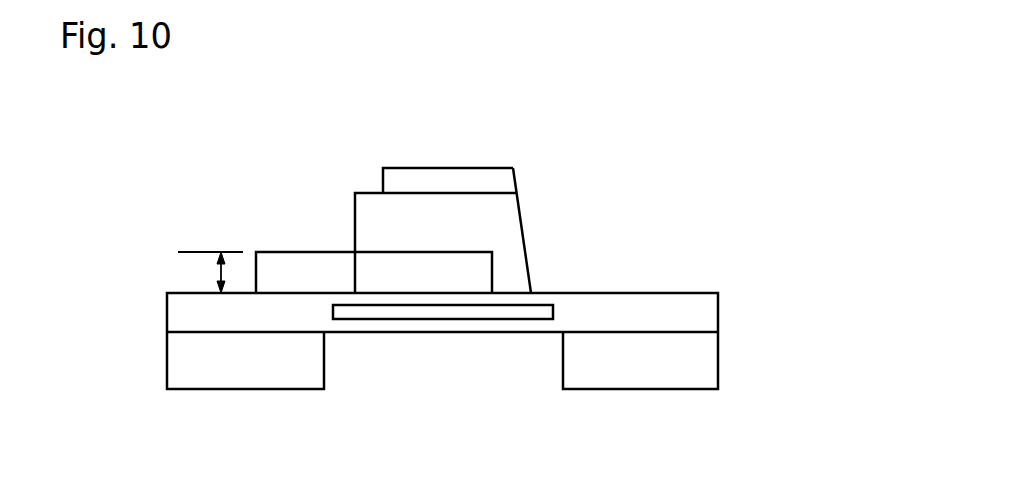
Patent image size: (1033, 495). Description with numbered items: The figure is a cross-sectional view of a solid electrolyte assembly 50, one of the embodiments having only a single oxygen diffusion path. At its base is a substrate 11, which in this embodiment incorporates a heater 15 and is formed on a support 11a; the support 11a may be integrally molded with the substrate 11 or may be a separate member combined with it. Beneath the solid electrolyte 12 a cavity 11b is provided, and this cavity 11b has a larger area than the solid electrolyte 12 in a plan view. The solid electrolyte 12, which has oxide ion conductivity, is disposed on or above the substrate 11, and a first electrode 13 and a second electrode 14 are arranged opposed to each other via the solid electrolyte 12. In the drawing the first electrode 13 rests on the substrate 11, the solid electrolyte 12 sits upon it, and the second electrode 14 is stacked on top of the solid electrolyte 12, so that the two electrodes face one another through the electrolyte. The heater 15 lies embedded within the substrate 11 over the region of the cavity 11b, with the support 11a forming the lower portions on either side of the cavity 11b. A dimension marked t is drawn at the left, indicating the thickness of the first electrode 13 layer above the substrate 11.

The solid electrolyte assembly 50 is at (792, 127).
The substrate 11 is at (708, 313).
The support 11a is at (708, 361).
The cavity 11b is at (500, 350).
The heater 15 is at (522, 311).
The first electrode 13 is at (309, 253).
The solid electrolyte 12 is at (517, 228).
The second electrode 14 is at (508, 180).
The thickness of layer 13 t is at (210, 273).